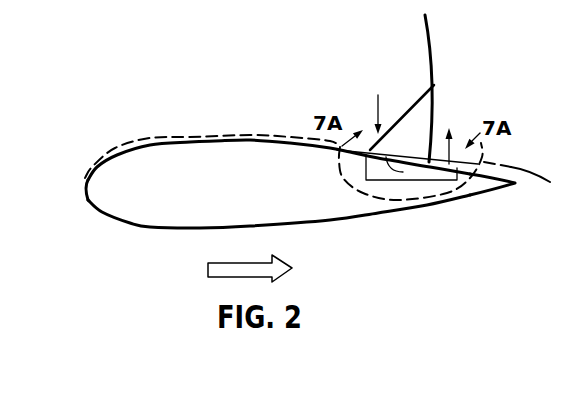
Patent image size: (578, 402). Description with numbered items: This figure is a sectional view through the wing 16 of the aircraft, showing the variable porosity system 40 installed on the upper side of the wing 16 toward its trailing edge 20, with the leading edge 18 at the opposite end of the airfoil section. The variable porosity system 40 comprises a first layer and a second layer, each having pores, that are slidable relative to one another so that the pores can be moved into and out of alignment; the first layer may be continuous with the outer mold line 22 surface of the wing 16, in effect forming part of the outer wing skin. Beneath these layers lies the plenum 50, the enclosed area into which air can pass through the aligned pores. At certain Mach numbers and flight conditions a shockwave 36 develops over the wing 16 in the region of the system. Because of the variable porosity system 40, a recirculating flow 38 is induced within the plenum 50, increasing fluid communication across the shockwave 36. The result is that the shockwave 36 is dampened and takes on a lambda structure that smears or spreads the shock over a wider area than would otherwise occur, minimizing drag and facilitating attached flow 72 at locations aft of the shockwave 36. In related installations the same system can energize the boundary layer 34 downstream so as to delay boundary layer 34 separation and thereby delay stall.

The wing 16 is at (116, 129).
The leading edge 18 is at (87, 191).
The trailing edge 20 is at (517, 184).
The outer mold line 22 is at (215, 138).
The boundary layer 34 is at (97, 156).
The shockwave 36 is at (447, 57).
The recirculating flow 38 is at (395, 155).
The variable porosity system 40 is at (360, 66).
The plenum 50 is at (420, 175).
The attached flow 72 is at (518, 170).